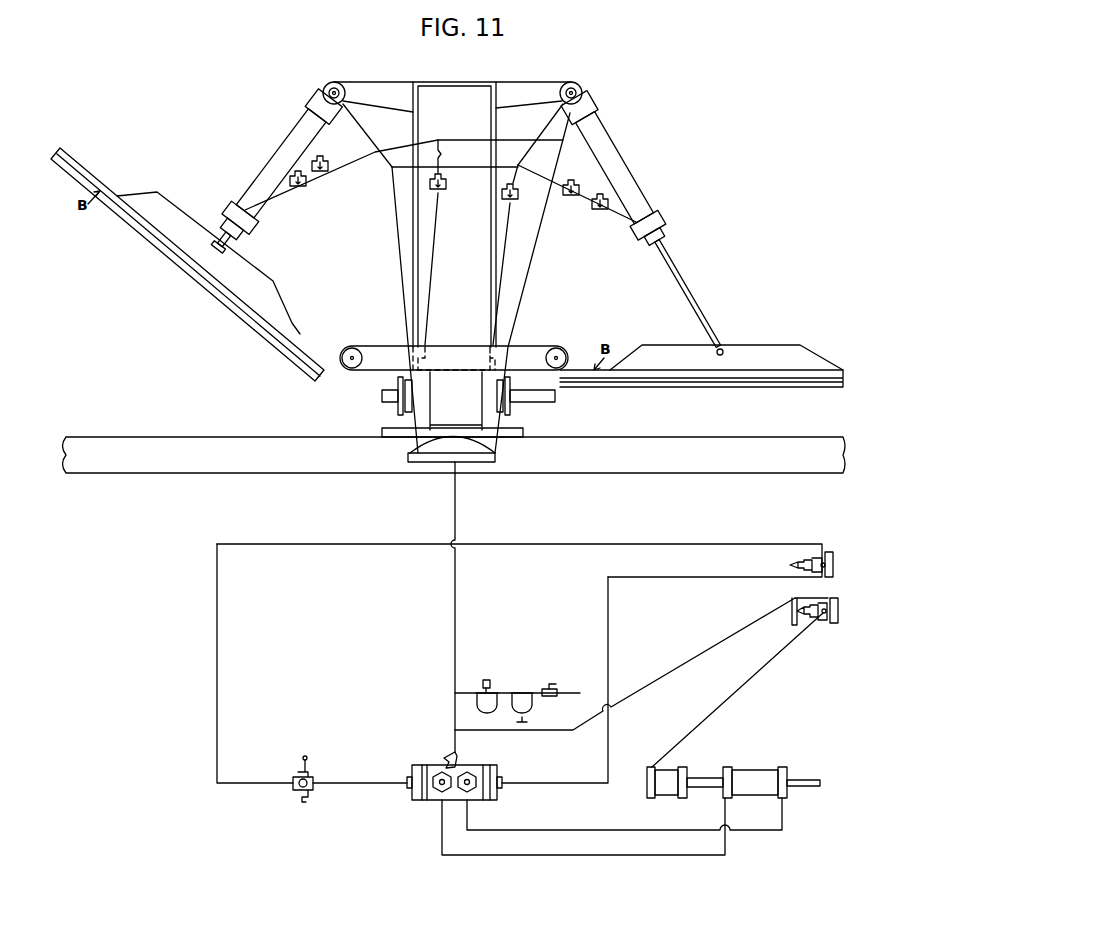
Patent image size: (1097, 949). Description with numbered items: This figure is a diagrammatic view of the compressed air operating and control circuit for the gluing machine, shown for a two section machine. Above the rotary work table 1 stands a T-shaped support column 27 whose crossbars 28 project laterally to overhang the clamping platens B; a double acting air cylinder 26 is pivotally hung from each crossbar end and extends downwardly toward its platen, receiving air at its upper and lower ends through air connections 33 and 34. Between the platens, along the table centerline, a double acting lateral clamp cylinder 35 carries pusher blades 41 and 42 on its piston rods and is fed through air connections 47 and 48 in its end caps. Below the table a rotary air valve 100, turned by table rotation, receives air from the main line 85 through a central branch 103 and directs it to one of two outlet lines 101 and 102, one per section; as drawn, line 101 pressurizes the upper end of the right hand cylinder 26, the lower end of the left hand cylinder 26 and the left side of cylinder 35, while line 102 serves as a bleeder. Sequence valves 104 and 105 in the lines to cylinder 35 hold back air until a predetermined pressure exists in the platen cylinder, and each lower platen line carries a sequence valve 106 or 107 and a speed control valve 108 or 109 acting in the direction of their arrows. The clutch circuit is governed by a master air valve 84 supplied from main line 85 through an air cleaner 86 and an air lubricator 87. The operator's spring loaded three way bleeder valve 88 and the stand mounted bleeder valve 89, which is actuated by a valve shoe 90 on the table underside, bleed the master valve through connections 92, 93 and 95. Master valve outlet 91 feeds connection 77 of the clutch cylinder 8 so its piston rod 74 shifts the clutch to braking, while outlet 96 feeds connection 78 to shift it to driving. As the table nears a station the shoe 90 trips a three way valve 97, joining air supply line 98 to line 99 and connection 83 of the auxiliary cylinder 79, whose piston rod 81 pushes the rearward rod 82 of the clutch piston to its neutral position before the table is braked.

The table 1 is at (770, 470).
The air cylinder 8 is at (752, 773).
The air cylinder 26 is at (304, 131).
The support column 27 is at (455, 91).
The crossbar 28 is at (532, 90).
The air connection 33 is at (346, 122).
The air connection 34 is at (276, 192).
The air cylinder 35 is at (460, 413).
The pusher blade 41 is at (543, 401).
The pusher blade 42 is at (390, 400).
The air connection 47 is at (428, 340).
The air connection 48 is at (490, 344).
The piston rod 74 is at (812, 788).
The air connection 77 is at (727, 809).
The air connection 78 is at (784, 813).
The auxiliary air cylinder 79 is at (665, 793).
The piston rod 81 is at (694, 781).
The piston rod 82 is at (717, 788).
The air connection 83 is at (652, 766).
The master air valve 84 is at (415, 800).
The main line 85 is at (568, 692).
The air cleaner 86 is at (527, 708).
The air lubricator 87 is at (487, 708).
The bleeder valve 88 is at (302, 773).
The bleeder valve 89 is at (830, 552).
The valve shoe 90 is at (795, 628).
The master valve outlet 91 is at (442, 792).
The connection 92 is at (610, 655).
The connection 93 is at (612, 545).
The connection 95 is at (355, 782).
The outlet 96 is at (469, 789).
The three way valve 97 is at (834, 622).
The air supply line 98 is at (717, 647).
The line 99 is at (747, 684).
The air valve 100 is at (473, 458).
The outlet line 101 is at (519, 307).
The outlet line 102 is at (403, 307).
The branch 103 is at (452, 489).
The sequence valve 104 is at (442, 190).
The sequence valve 105 is at (505, 199).
The sequence valve 106 is at (306, 188).
The sequence valve 107 is at (598, 214).
The speed control valve 108 is at (329, 170).
The speed control valve 109 is at (568, 197).